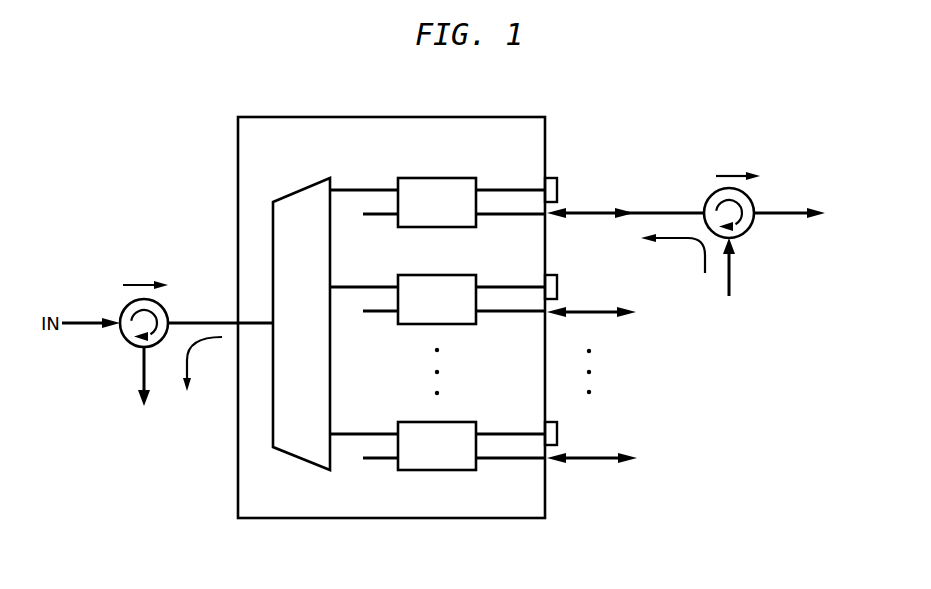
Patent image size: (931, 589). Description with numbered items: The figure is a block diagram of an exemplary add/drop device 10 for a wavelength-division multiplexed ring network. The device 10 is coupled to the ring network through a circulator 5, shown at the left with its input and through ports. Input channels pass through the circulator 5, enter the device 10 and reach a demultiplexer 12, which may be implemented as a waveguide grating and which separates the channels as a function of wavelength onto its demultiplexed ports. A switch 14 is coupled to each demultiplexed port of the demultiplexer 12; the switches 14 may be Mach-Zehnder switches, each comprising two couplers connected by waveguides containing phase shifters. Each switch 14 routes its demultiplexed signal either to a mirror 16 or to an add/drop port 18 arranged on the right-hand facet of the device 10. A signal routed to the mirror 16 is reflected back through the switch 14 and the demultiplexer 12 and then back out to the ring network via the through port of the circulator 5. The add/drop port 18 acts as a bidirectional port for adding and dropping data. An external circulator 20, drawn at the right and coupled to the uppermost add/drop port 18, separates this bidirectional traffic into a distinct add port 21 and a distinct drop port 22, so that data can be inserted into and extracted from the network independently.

The circulator 5 is at (126, 343).
The add/drop device 10 is at (462, 518).
The demultiplexer 12 is at (302, 189).
The switch 14 is at (433, 177).
The mirror 16 is at (557, 197).
The add/drop port 18 is at (548, 240).
The external circulator 20 is at (711, 195).
The add port 21 is at (731, 278).
The drop port 22 is at (775, 212).